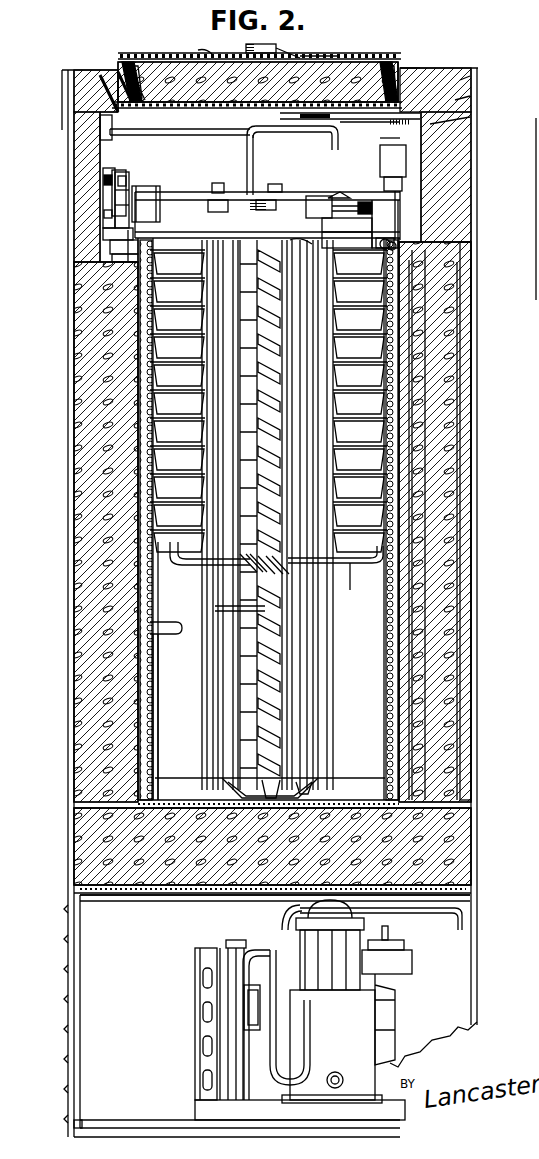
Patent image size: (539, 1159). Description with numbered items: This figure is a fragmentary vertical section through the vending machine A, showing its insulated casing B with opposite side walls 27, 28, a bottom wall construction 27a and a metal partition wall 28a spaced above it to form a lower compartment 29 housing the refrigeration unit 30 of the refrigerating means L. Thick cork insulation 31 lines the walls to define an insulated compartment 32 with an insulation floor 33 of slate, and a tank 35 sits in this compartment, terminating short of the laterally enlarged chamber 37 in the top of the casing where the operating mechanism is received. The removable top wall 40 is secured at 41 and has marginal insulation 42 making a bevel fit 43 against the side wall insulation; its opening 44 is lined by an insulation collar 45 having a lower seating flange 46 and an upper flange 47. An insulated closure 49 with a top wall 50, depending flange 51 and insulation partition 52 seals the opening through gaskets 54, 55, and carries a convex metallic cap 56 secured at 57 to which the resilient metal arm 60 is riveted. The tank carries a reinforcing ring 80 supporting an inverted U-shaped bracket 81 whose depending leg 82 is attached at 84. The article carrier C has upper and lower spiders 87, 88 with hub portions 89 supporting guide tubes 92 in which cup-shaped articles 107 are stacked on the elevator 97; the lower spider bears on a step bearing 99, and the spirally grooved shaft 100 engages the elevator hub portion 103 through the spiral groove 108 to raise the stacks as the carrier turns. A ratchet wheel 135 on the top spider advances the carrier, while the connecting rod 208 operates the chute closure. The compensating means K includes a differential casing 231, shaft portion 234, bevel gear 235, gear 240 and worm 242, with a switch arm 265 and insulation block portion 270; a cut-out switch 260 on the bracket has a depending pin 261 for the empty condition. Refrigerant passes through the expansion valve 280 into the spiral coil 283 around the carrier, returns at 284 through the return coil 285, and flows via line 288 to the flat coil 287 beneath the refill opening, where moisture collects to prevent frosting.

The side wall 27 is at (68, 810).
The bottom wall construction 27a is at (94, 1130).
The side wall 28 is at (468, 772).
The metal partition wall 28a is at (160, 888).
The lower compartment 29 is at (272, 1016).
The refrigeration unit 30 is at (390, 1028).
The insulation 31 is at (74, 681).
The insulated compartment 32 is at (455, 722).
The insulation floor 33 is at (430, 812).
The tank 35 is at (410, 620).
The laterally enlarged chamber 37 is at (362, 112).
The removable top wall 40 is at (440, 72).
The securing point 41 is at (470, 76).
The marginal insulation 42 is at (470, 96).
The bevel fit 43 is at (470, 117).
The opening 44 is at (156, 112).
The insulation collar 45 is at (106, 80).
The lower horizontal closure seating flange 46 is at (132, 120).
The upper horizontal flange 47 is at (110, 62).
The closure 49 is at (322, 56).
The top wall 50 is at (150, 62).
The depending flange 51 is at (392, 62).
The insulation partition 52 is at (242, 90).
The gasket 54 is at (410, 66).
The gasket 55 is at (378, 124).
The metallic convexly shaped cap 56 is at (204, 56).
The securing point 57 is at (175, 60).
The resilient metal arm 60 is at (292, 48).
The reinforcing ring 80 is at (412, 262).
The inverted U-shaped bracket 81 is at (340, 190).
The depending leg 82 is at (402, 228).
The attachment point 84 is at (398, 242).
The upper guide supporting spider 87 is at (300, 242).
The lower guide supporting spider 88 is at (306, 786).
The disc-like central hub portion 89 is at (300, 790).
The guide tubes 92 is at (158, 712).
The elevator 97 is at (332, 566).
The step bearing 99 is at (264, 790).
The spirally grooved removable shaft 100 is at (272, 656).
The hub portion 103 is at (320, 578).
The articles 107 is at (268, 401).
The spiral groove 108 is at (276, 190).
The ratchet wheel 135 is at (250, 240).
The connecting rod 208 is at (110, 236).
The casing 231 is at (146, 196).
The shaft portion 234 is at (228, 196).
The bevel gear 235 is at (112, 258).
The gear 240 is at (144, 186).
The worm 242 is at (264, 196).
The cut-out switch 260 is at (318, 200).
The depending pin 261 is at (358, 226).
The switch arm 265 is at (118, 190).
The insulation block portion 270 is at (103, 176).
The expansion valve 280 is at (408, 156).
The spiral coil 283 is at (150, 630).
The return point 284 is at (160, 640).
The return coil 285 is at (158, 600).
The flat coil 287 is at (208, 128).
The line 288 is at (250, 150).
The vending machine A is at (70, 328).
The insulated casing B is at (536, 300).
The article carrier C is at (424, 668).
The compensating means K is at (166, 194).
The refrigerating means L is at (196, 978).